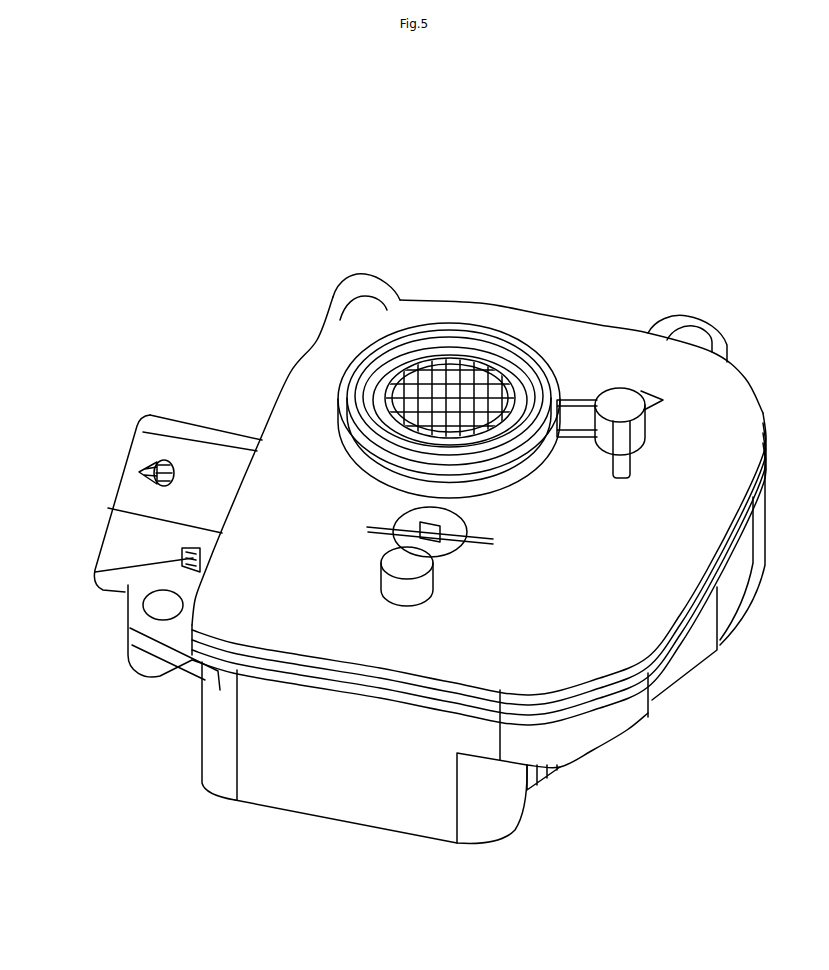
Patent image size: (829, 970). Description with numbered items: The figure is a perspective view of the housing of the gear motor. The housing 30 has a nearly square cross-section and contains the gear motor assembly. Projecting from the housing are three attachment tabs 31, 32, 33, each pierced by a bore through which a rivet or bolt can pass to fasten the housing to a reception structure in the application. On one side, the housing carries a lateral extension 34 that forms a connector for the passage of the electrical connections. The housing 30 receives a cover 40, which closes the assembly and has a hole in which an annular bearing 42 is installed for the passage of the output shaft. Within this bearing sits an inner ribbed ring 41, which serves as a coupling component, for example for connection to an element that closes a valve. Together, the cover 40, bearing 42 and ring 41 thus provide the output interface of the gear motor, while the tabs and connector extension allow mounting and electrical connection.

The housing 30 is at (237, 803).
The attachment tab 31 is at (160, 650).
The attachment tab 32 is at (332, 300).
The attachment tab 33 is at (707, 320).
The lateral extension 34 is at (195, 463).
The cover 40 is at (540, 323).
The inner ribbed ring 41 is at (430, 363).
The annular bearing 42 is at (343, 383).